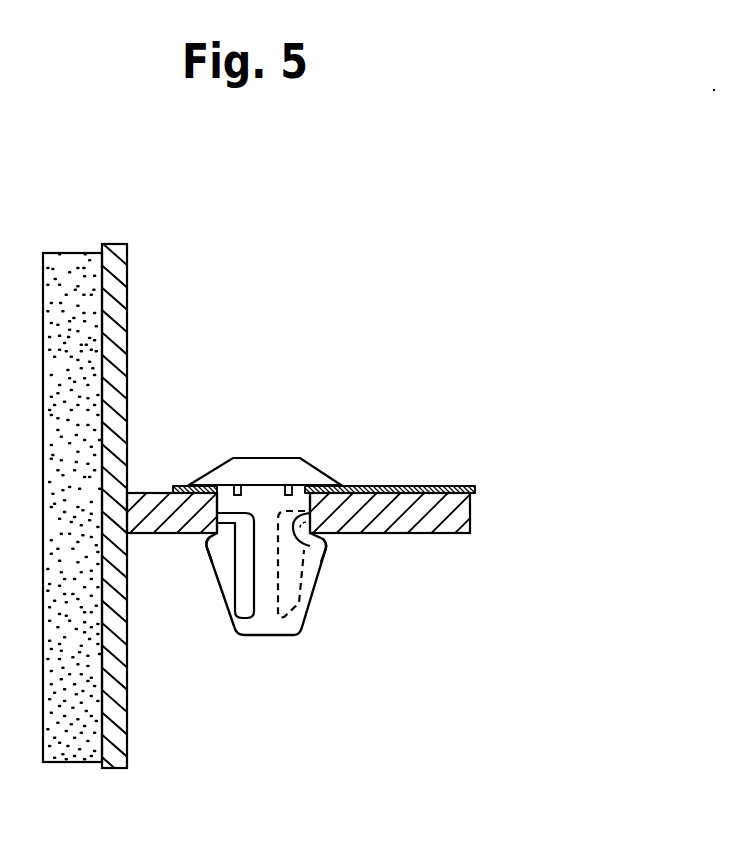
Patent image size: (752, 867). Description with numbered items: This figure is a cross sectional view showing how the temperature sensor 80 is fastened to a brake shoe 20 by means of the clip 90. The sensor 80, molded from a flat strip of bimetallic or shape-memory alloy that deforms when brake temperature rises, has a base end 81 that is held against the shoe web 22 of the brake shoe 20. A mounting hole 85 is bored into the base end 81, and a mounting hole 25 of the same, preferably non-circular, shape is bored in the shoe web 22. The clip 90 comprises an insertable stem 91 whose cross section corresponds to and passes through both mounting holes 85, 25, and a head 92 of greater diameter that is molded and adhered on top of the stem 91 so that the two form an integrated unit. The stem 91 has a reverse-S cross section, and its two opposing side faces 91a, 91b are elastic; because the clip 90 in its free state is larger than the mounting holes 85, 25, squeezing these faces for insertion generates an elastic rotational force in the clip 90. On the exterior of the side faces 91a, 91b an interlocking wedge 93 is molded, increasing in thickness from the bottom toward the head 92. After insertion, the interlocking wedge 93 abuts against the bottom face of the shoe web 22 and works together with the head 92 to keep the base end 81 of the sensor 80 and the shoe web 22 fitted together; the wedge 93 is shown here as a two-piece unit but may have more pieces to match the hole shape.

The brake shoe 20 is at (130, 288).
The shoe web 22 is at (428, 513).
The temperature sensor 80 is at (452, 482).
The base end 81 is at (178, 485).
The mounting hole 85 is at (315, 468).
The clip 90 is at (268, 519).
The head 92 is at (231, 460).
The insertable stem 91 is at (268, 594).
The side face 91a is at (308, 615).
The side face 91b is at (220, 588).
The interlocking wedge 93 is at (212, 552).
The mounting hole 25 is at (310, 536).